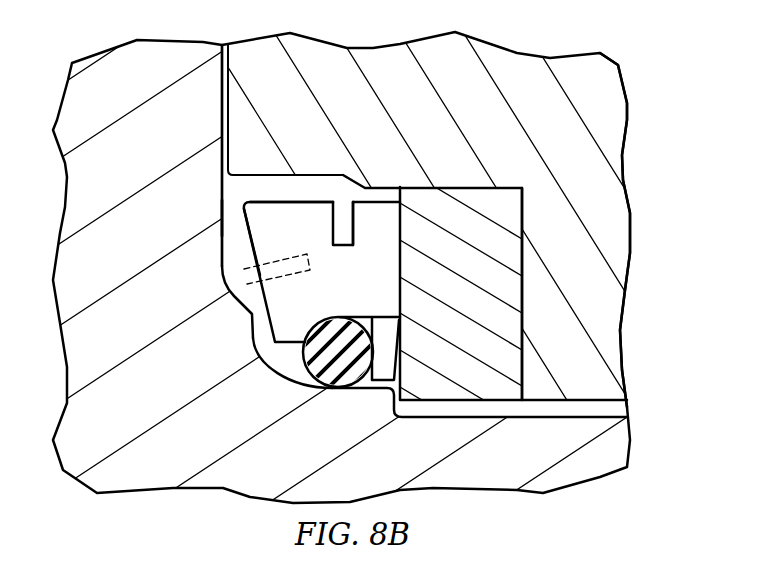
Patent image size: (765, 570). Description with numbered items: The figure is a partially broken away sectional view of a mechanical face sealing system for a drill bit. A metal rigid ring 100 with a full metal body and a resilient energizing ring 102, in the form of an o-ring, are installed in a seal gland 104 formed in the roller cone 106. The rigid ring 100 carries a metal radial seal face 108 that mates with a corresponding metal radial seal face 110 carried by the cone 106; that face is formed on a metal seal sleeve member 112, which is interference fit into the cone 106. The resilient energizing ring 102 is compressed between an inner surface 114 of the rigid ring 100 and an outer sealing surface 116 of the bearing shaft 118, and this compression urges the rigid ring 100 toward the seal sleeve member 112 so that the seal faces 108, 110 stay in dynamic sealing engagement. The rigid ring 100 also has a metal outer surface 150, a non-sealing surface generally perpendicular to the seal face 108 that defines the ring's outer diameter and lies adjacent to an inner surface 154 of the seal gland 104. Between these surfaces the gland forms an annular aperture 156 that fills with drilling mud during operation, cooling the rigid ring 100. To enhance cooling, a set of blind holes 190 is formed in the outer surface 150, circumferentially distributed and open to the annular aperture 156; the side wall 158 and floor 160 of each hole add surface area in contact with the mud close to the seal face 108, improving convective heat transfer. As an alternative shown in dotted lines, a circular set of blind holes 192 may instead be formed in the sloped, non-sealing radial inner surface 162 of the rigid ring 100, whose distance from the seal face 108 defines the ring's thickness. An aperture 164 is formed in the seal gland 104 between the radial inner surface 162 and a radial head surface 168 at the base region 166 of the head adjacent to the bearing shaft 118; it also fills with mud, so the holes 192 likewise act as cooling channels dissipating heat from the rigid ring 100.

The rigid ring 100 is at (278, 302).
The resilient energizing ring 102 is at (300, 358).
The seal gland 104 is at (381, 134).
The roller cone 106 is at (606, 212).
The metal radial seal face 108 is at (401, 228).
The corresponding metal radial seal face 110 is at (393, 194).
The metal seal sleeve member 112 is at (514, 323).
The inner surface of the rigid ring 114 is at (378, 334).
The outer sealing surface of the bearing shaft 116 is at (321, 389).
The bearing shaft 118 is at (507, 460).
The metal outer surface 150 is at (293, 178).
The inner surface of the seal gland 154 is at (261, 176).
The annular aperture 156 is at (313, 191).
The side wall 158 is at (354, 229).
The floor 160 is at (334, 233).
The radial inner surface 162 is at (244, 246).
The aperture 164 is at (229, 223).
The base region of the head 166 is at (145, 184).
The radial head surface 168 is at (221, 190).
The set of blind holes 190 is at (350, 202).
The circular set of blind holes 192 is at (244, 271).